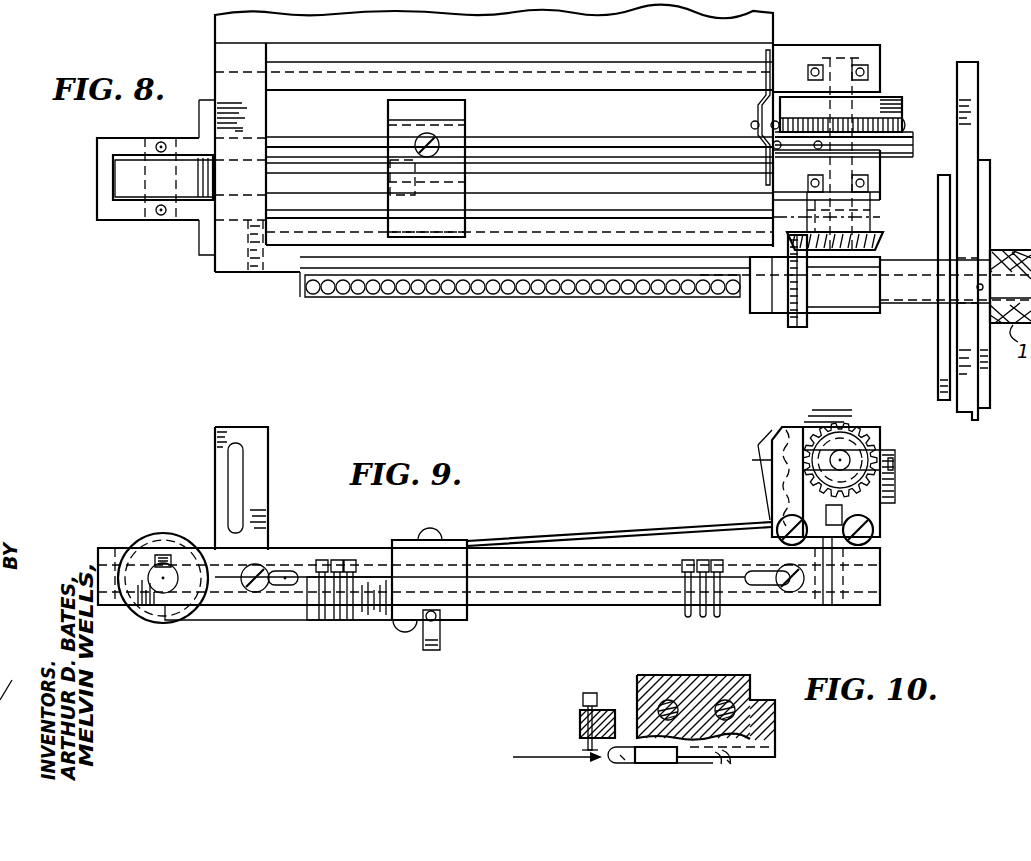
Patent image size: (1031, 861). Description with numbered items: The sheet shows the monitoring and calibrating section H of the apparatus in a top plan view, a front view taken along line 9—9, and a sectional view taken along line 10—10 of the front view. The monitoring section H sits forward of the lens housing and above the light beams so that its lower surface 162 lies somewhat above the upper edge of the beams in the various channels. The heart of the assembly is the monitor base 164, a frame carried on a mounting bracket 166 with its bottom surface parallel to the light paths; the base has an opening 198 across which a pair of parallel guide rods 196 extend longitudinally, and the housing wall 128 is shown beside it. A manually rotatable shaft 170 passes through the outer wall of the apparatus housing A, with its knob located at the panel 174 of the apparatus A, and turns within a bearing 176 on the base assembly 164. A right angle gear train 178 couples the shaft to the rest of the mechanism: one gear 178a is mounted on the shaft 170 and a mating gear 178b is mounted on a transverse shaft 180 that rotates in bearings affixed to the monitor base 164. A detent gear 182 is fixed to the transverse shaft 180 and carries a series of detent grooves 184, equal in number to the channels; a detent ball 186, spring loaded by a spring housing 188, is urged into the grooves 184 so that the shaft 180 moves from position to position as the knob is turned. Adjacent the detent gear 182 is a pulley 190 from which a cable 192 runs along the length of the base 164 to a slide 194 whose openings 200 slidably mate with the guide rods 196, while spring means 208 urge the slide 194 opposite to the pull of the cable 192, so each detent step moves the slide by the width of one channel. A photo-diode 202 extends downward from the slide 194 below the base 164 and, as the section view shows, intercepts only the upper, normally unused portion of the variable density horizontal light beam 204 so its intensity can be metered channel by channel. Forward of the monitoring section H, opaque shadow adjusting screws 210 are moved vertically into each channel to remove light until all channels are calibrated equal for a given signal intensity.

In FIG. 8, the housing wall 128 is at (268, 122).
In FIG. 9, the lower surface 162 is at (552, 606).
In FIG. 10, the lower surface 162 is at (580, 749).
In FIG. 8, the monitor base 164 is at (290, 250).
In FIG. 9, the monitor base 164 is at (620, 606).
In FIG. 10, the monitor base 164 is at (607, 710).
In FIG. 8, the mounting bracket 166 is at (228, 228).
In FIG. 8, the manually rotatable shaft 170 is at (903, 275).
In FIG. 9, the manually rotatable shaft 170 is at (895, 462).
In FIG. 8, the panel 174 is at (978, 191).
In FIG. 8, the bearing 176 is at (862, 306).
In FIG. 8, the right angle gear train 178 is at (822, 262).
In FIG. 9, the right angle gear train 178 is at (865, 442).
In FIG. 8, the gear 178a is at (788, 308).
In FIG. 8, the mating gear 178b is at (860, 232).
In FIG. 8, the transverse shaft 180 is at (840, 92).
In FIG. 9, the transverse shaft 180 is at (840, 460).
In FIG. 8, the detent gear 182 is at (908, 120).
In FIG. 9, the detent gear 182 is at (883, 504).
In FIG. 9, the detent grooves 184 is at (840, 403).
In FIG. 8, the detent ball 186 is at (757, 122).
In FIG. 9, the detent ball 186 is at (768, 470).
In FIG. 8, the spring housing 188 is at (770, 127).
In FIG. 8, the pulley 190 is at (128, 190).
In FIG. 9, the pulley 190 is at (160, 617).
In FIG. 8, the cable 192 is at (603, 147).
In FIG. 9, the cable 192 is at (710, 530).
In FIG. 8, the slide 194 is at (452, 176).
In FIG. 9, the slide 194 is at (457, 540).
In FIG. 10, the slide 194 is at (677, 676).
In FIG. 8, the guide rods 196 is at (640, 195).
In FIG. 9, the guide rods 196 is at (590, 565).
In FIG. 10, the guide rods 196 is at (719, 700).
In FIG. 8, the opening 198 is at (925, 142).
In FIG. 8, the openings 200 is at (396, 152).
In FIG. 10, the openings 200 is at (668, 700).
In FIG. 9, the photo-diode 202 is at (440, 632).
In FIG. 10, the photo-diode 202 is at (618, 761).
In FIG. 10, the variable density horizontal light beam 204 is at (546, 757).
In FIG. 8, the spring means 208 is at (213, 180).
In FIG. 9, the spring means 208 is at (268, 620).
In FIG. 8, the shadow adjusting screws 210 is at (516, 290).
In FIG. 9, the shadow adjusting screws 210 is at (337, 562).
In FIG. 10, the shadow adjusting screws 210 is at (580, 697).
In FIG. 9, the section line 10— 10 is at (430, 552).
In FIG. 8, the section line 9— 9 is at (118, 318).
In FIG. 8, the monitoring section H is at (248, 316).
In FIG. 9, the monitoring section H is at (554, 528).
In FIG. 8, the apparatus housing A is at (984, 87).